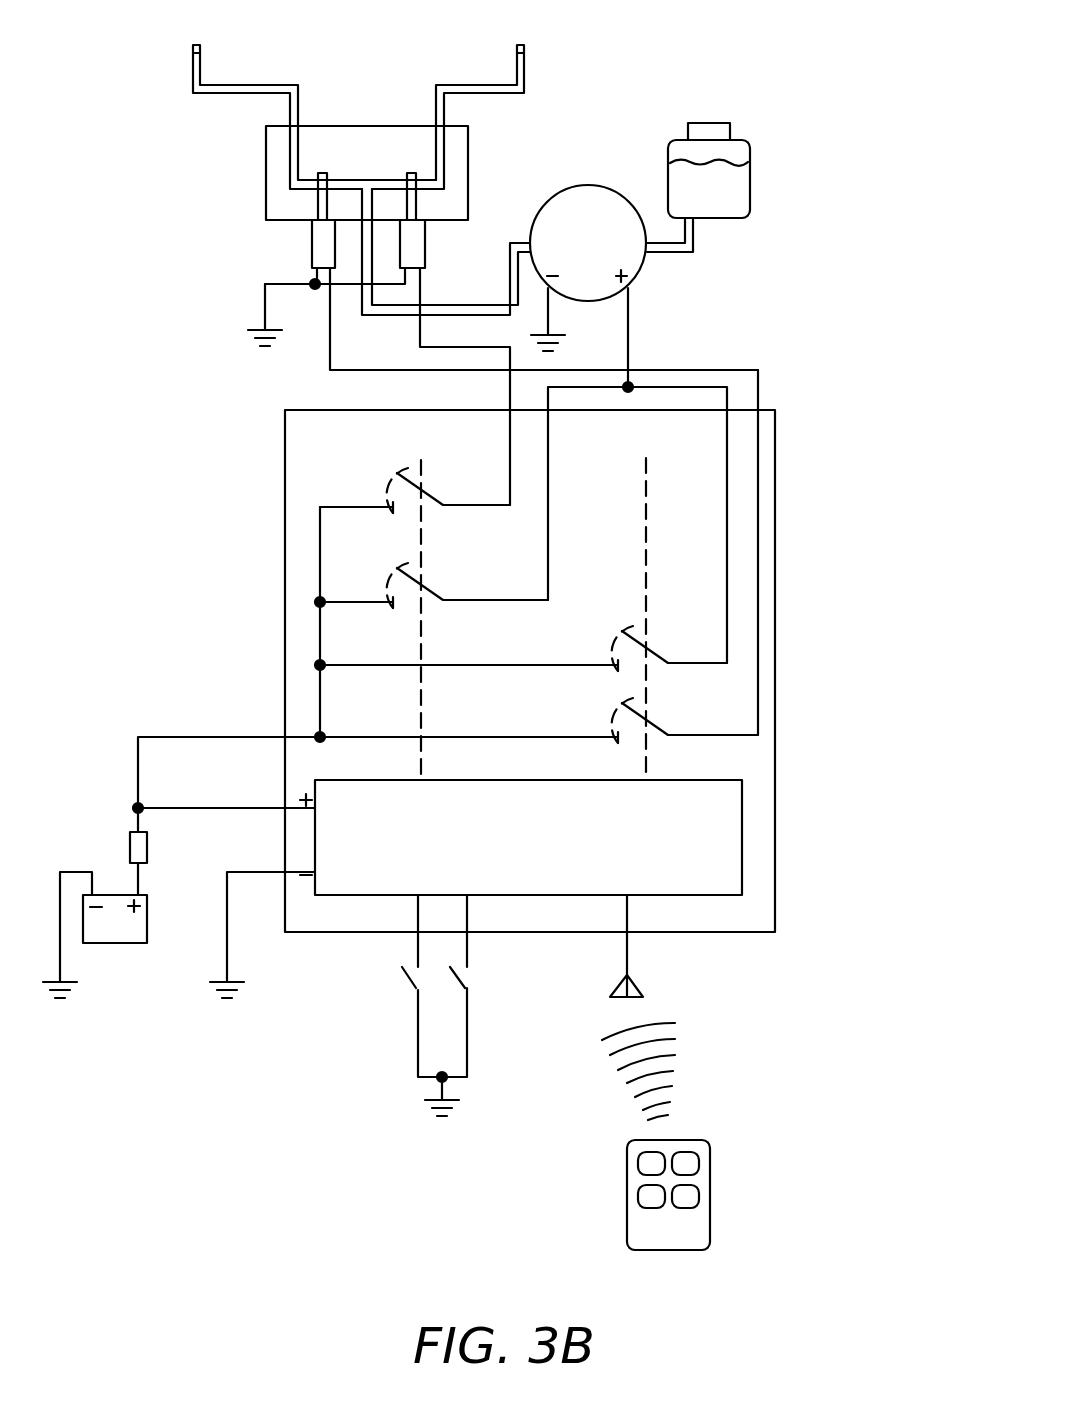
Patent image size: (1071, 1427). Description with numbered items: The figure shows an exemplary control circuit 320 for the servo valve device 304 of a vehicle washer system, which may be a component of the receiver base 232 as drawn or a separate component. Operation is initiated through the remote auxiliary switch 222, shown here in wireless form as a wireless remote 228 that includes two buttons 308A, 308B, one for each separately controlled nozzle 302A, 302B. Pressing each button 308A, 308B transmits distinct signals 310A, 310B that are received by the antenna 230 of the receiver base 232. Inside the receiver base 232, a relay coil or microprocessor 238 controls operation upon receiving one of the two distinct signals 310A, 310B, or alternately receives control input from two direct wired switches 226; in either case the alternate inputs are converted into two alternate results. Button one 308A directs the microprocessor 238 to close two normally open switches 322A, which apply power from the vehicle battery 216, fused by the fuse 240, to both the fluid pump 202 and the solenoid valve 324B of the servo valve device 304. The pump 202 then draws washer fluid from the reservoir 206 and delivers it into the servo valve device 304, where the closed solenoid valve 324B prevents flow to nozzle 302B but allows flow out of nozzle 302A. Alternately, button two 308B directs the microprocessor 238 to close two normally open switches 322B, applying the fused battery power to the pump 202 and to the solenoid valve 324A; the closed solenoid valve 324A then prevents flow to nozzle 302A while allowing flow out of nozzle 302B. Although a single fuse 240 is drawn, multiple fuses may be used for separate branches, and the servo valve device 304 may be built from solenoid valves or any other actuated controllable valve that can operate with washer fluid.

The nozzle 302A is at (190, 45).
The nozzle 302B is at (526, 45).
The servo valve device 304 is at (469, 156).
The solenoid valve 324A is at (312, 258).
The solenoid valve 324B is at (427, 252).
The cleaning solution pump 202 is at (637, 278).
The reservoir 206 is at (710, 220).
The control circuit 320 is at (832, 338).
The receiver base 232 is at (318, 411).
The normally open switches 322A is at (312, 480).
The normally open switches 322B is at (770, 670).
The relay coil or microprocessor 238 is at (742, 830).
The fuse 240 is at (130, 848).
The vehicle battery 216 is at (108, 943).
The direct wired switches 226 is at (400, 1025).
The antenna 230 is at (628, 950).
The remote auxiliary switch 222 is at (432, 1192).
The wireless remote 228 is at (648, 1173).
The signal 310A is at (608, 1130).
The signal 310B is at (592, 1177).
The button 308A is at (643, 1207).
The button 308B is at (693, 1207).